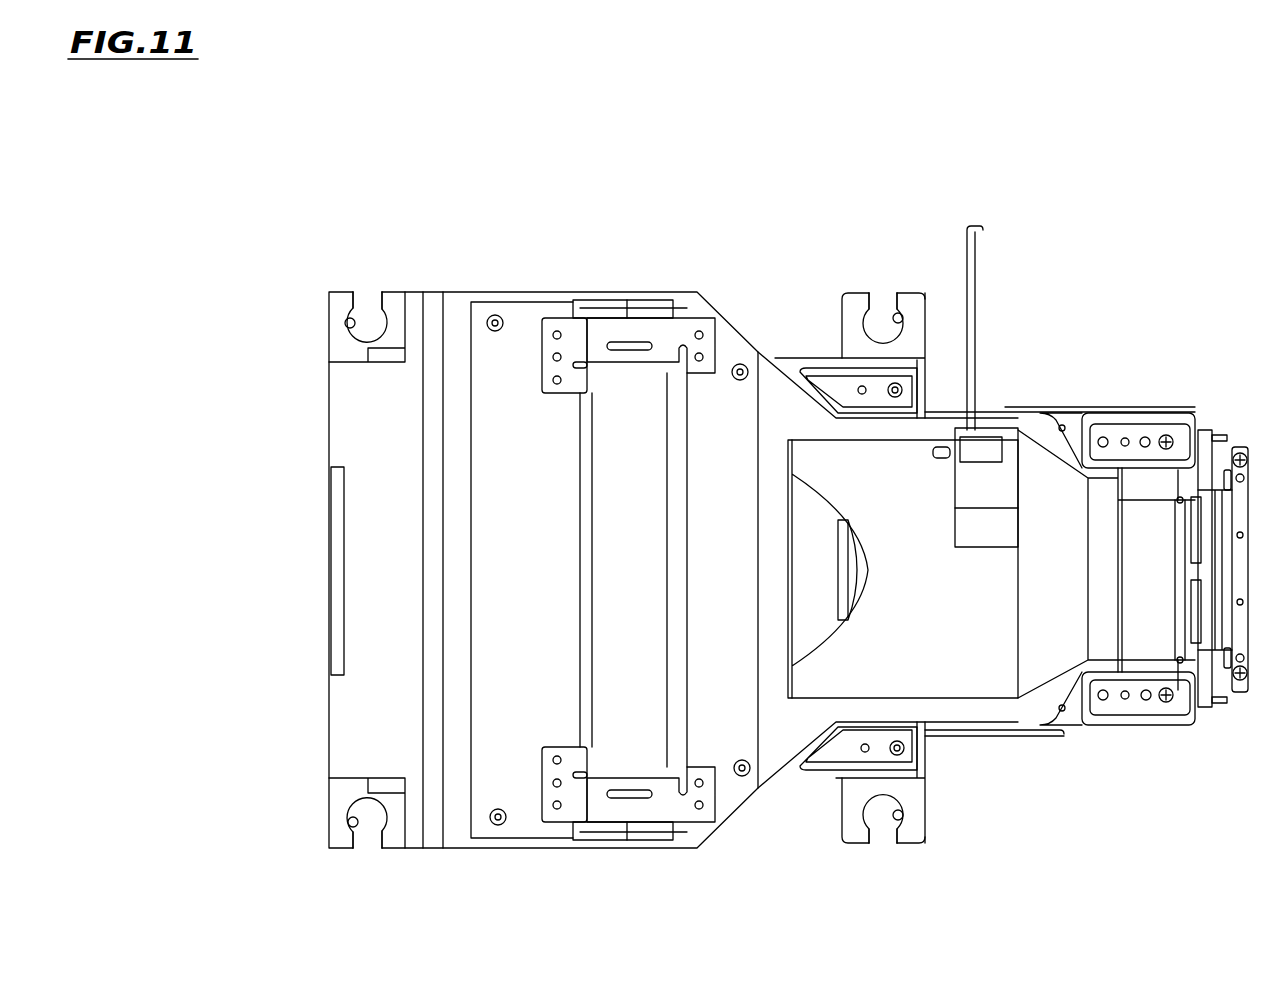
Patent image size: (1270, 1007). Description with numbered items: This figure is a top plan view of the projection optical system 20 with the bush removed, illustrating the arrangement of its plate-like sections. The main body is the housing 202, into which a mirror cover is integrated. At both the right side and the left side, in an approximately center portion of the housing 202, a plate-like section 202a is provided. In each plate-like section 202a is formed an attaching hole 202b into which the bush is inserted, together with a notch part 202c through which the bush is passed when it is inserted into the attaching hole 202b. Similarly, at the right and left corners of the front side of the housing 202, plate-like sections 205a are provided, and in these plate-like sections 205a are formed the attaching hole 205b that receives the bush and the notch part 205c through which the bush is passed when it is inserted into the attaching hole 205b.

The projection optical system 20 is at (530, 282).
The housing 202 is at (610, 293).
The plate-like section 202a is at (838, 292).
The attaching hole 202b is at (897, 310).
The notch part 202c is at (873, 310).
The plate-like section 205a is at (318, 292).
The attaching hole 205b is at (348, 333).
The notch part 205c is at (353, 297).